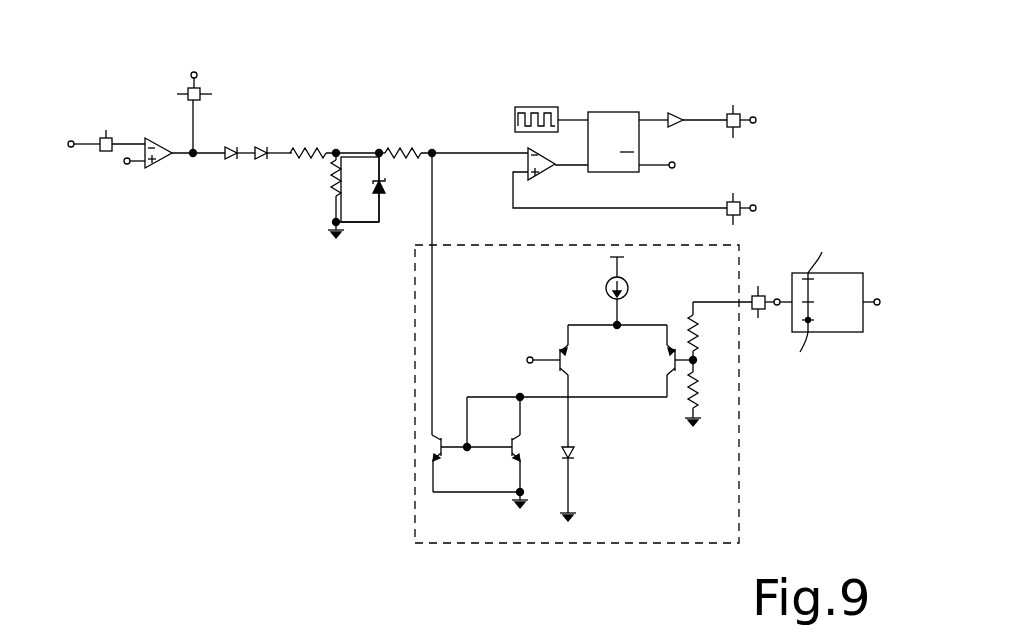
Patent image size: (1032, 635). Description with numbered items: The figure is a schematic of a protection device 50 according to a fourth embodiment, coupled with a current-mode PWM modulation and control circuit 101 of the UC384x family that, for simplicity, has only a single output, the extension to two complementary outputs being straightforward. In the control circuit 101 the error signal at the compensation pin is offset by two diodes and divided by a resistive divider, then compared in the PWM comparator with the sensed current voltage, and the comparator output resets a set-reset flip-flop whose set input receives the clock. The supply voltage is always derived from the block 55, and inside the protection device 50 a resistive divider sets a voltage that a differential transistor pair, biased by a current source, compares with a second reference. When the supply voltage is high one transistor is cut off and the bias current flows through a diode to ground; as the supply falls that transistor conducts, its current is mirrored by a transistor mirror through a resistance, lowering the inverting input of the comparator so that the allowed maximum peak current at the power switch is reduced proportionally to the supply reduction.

The PWM modulation and control circuit 101 is at (106, 93).
The protection device 50 is at (366, 383).
The block 55 is at (843, 332).